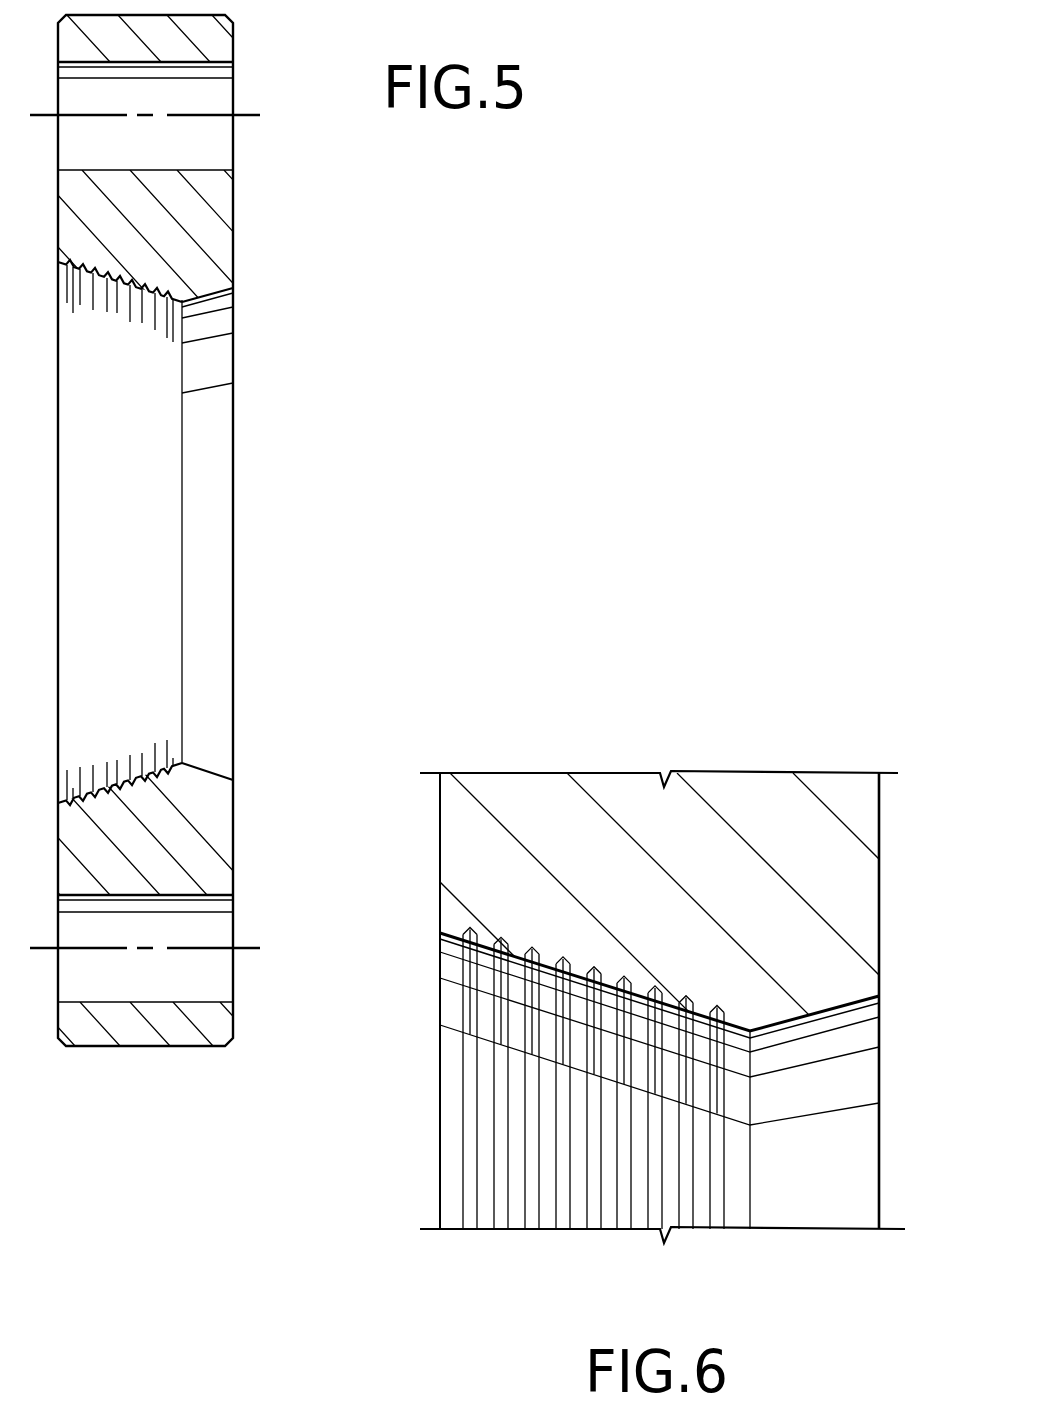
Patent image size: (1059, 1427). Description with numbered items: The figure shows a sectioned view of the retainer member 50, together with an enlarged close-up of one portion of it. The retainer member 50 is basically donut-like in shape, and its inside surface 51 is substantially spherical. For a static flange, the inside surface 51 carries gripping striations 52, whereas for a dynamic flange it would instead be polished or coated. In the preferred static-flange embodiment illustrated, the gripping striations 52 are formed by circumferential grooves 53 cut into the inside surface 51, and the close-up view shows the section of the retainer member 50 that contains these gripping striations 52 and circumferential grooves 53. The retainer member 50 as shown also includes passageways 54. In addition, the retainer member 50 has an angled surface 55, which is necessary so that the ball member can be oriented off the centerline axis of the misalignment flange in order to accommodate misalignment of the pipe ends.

In FIG. 5, the retainer member 50 is at (240, 500).
In FIG. 6, the retainer member 50 is at (752, 808).
In FIG. 5, the inside surface 51 is at (118, 432).
In FIG. 6, the inside surface 51 is at (550, 1172).
In FIG. 6, the gripping striations 52 is at (532, 1003).
In FIG. 5, the circumferential grooves 53 is at (124, 977).
In FIG. 6, the circumferential grooves 53 is at (530, 928).
In FIG. 5, the passageways 54 is at (203, 137).
In FIG. 5, the angled surface 55 is at (218, 354).